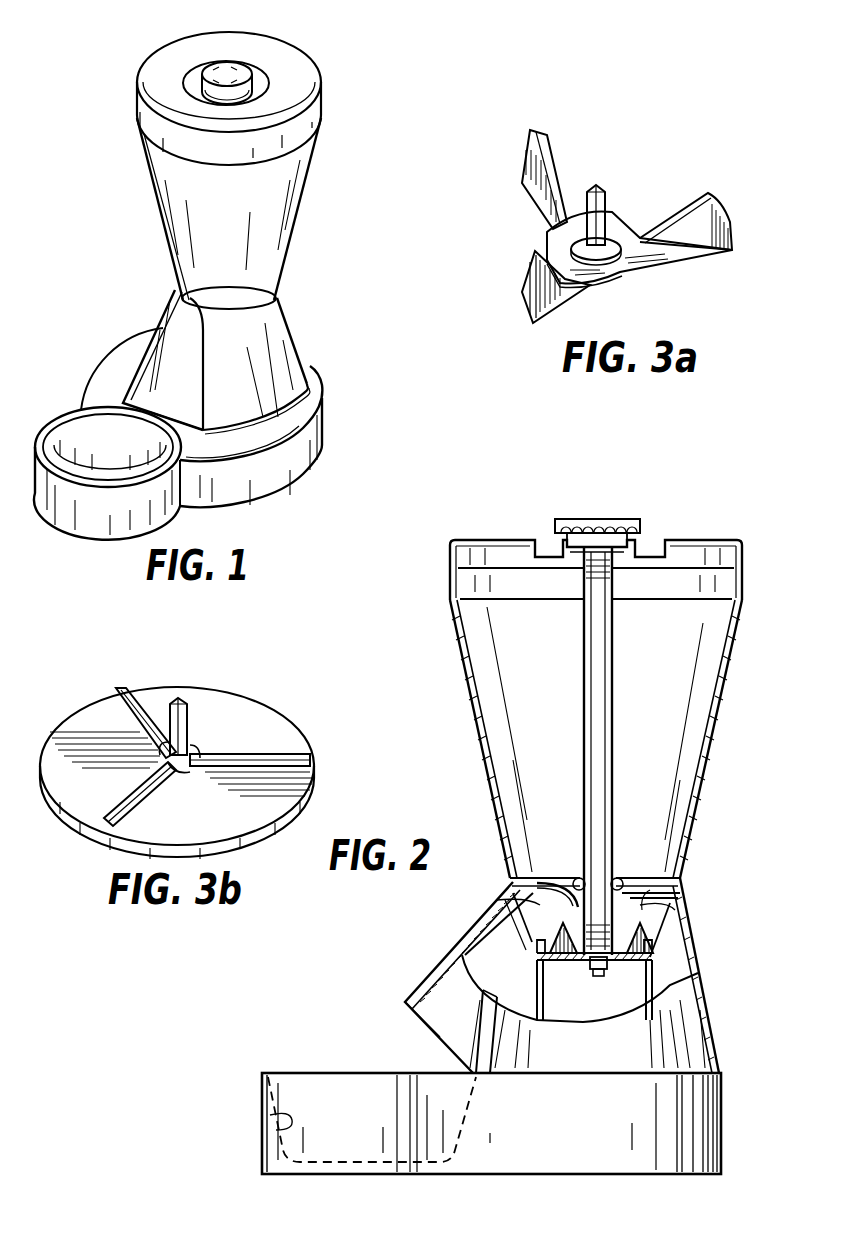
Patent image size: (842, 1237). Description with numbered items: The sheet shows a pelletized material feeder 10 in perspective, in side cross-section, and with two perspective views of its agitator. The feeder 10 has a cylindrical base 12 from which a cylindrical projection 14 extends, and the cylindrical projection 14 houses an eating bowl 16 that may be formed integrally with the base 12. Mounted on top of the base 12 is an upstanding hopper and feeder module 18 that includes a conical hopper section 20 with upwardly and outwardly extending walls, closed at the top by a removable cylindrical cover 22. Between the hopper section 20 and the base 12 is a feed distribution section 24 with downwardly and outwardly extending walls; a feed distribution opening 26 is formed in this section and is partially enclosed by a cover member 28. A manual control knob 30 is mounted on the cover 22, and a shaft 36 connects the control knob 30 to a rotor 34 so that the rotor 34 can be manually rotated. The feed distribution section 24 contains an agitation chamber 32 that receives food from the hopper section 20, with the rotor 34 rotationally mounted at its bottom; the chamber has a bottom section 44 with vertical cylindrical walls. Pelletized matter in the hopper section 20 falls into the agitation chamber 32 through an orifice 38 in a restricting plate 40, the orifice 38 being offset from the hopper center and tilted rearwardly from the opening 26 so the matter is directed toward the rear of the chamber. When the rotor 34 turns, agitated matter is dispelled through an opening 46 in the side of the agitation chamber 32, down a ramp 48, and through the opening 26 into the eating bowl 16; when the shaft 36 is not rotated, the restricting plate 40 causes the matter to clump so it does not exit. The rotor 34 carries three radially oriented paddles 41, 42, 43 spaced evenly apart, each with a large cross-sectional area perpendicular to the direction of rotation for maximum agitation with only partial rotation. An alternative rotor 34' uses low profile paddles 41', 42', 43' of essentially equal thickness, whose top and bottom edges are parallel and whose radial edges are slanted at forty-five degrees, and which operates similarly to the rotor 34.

In FIG. 1, the pelletized material feeder 10 is at (110, 102).
In FIG. 2, the pelletized material feeder 10 is at (428, 652).
In FIG. 1, the cylindrical base 12 is at (318, 445).
In FIG. 2, the cylindrical base 12 is at (718, 1146).
In FIG. 1, the cylindrical projection 14 is at (98, 528).
In FIG. 2, the cylindrical projection 14 is at (262, 1154).
In FIG. 1, the eating bowl 16 is at (74, 432).
In FIG. 2, the eating bowl 16 is at (262, 1125).
In FIG. 1, the hopper and feeder module 18 is at (278, 283).
In FIG. 2, the hopper and feeder module 18 is at (682, 878).
In FIG. 1, the conical hopper section 20 is at (294, 190).
In FIG. 2, the conical hopper section 20 is at (718, 730).
In FIG. 1, the removable cylindrical cover 22 is at (306, 62).
In FIG. 2, the removable cylindrical cover 22 is at (679, 540).
In FIG. 1, the feed distribution section 24 is at (300, 340).
In FIG. 2, the feed distribution section 24 is at (709, 1022).
In FIG. 1, the feed distribution opening 26 is at (181, 424).
In FIG. 2, the feed distribution opening 26 is at (428, 1036).
In FIG. 1, the cover member 28 is at (156, 370).
In FIG. 2, the cover member 28 is at (430, 975).
In FIG. 1, the control knob 30 is at (230, 63).
In FIG. 2, the control knob 30 is at (577, 523).
In FIG. 2, the agitation chamber 32 is at (680, 895).
In FIG. 3A, the rotor 34 is at (639, 221).
In FIG. 2, the rotor 34 is at (595, 971).
In FIG. 3B, the rotor 34' is at (177, 752).
In FIG. 2, the shaft 36 is at (612, 658).
In FIG. 2, the orifice 38 is at (644, 858).
In FIG. 2, the restricting plate 40 is at (572, 878).
In FIG. 3A, the paddle 41 is at (704, 223).
In FIG. 3B, the paddle 41' is at (260, 737).
In FIG. 3A, the paddle 42 is at (530, 182).
In FIG. 3B, the paddle 42' is at (123, 715).
In FIG. 3A, the paddle 43 is at (559, 296).
In FIG. 3B, the paddle 43' is at (150, 801).
In FIG. 2, the bottom section 44 is at (682, 913).
In FIG. 2, the opening 46 is at (514, 900).
In FIG. 2, the ramp 48 is at (500, 967).